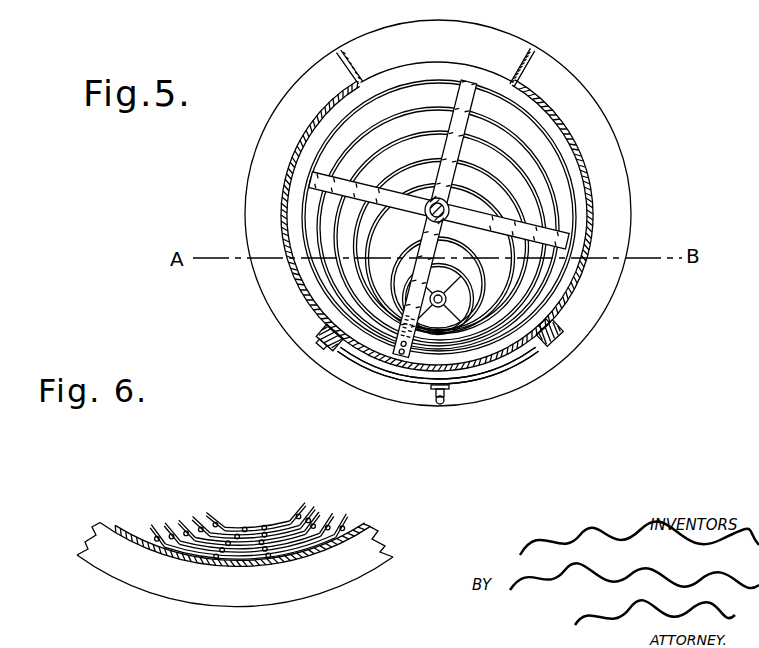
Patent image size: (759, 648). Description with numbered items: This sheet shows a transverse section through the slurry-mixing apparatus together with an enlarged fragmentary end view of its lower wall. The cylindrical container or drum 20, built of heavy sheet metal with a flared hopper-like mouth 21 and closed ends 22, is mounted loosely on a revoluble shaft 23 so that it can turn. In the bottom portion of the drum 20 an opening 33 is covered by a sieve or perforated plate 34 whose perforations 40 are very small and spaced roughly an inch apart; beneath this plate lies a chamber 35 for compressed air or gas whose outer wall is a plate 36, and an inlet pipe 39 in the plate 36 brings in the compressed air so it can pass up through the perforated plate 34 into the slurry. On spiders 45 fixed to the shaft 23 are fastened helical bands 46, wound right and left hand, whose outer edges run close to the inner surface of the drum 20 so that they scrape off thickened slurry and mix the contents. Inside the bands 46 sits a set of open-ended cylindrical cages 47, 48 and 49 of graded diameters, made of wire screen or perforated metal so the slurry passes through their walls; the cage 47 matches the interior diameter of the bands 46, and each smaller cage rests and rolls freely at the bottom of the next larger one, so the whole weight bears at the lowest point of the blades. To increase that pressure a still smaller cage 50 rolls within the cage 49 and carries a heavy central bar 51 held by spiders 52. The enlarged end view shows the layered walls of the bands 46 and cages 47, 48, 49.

In FIG. 5, the container 20 is at (289, 101).
In FIG. 5, the flared mouth 21 is at (523, 49).
In FIG. 5, the closed ends 22 is at (488, 10).
In FIG. 5, the shaft 23 is at (292, 225).
In FIG. 5, the opening 33 is at (343, 362).
In FIG. 5, the perforated plate 34 is at (377, 365).
In FIG. 5, the chamber 35 is at (408, 376).
In FIG. 5, the plate 36 is at (490, 380).
In FIG. 5, the inlet pipe 39 is at (440, 404).
In FIG. 5, the perforations 40 is at (517, 352).
In FIG. 5, the spiders 45 is at (317, 183).
In FIG. 5, the helical bands 46 is at (578, 198).
In FIG. 6, the helical bands 46 is at (313, 585).
In FIG. 5, the cylindrical cage 47 is at (524, 110).
In FIG. 6, the cylindrical cage 47 is at (125, 538).
In FIG. 5, the cylindrical cage 48 is at (512, 193).
In FIG. 6, the cylindrical cage 48 is at (150, 533).
In FIG. 5, the cylindrical cage 49 is at (465, 252).
In FIG. 6, the cylindrical cage 49 is at (270, 500).
In FIG. 5, the cylindrical cage 50 is at (468, 287).
In FIG. 5, the central bar 51 is at (410, 288).
In FIG. 5, the spiders 52 is at (428, 244).